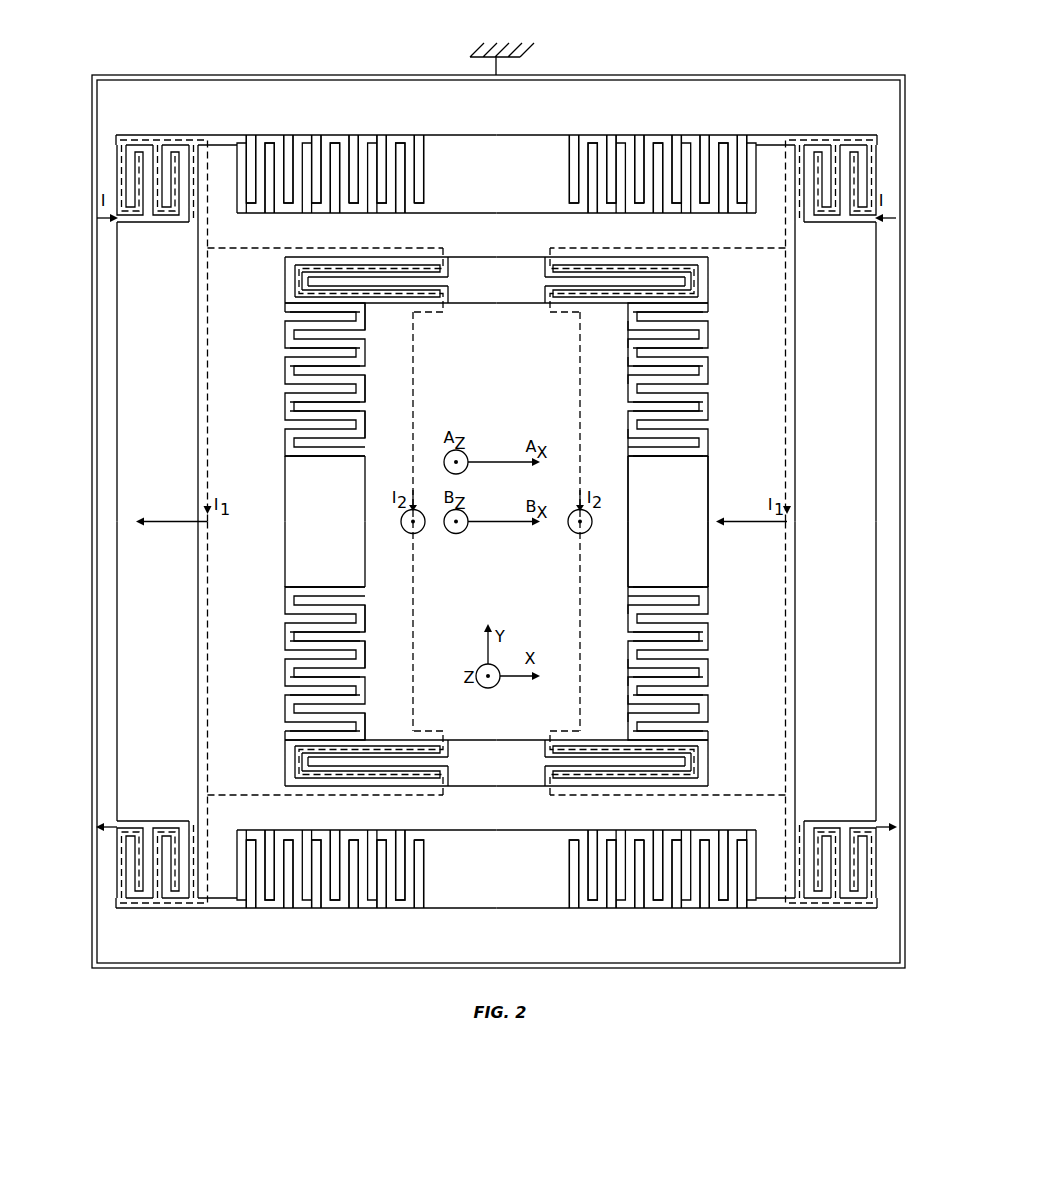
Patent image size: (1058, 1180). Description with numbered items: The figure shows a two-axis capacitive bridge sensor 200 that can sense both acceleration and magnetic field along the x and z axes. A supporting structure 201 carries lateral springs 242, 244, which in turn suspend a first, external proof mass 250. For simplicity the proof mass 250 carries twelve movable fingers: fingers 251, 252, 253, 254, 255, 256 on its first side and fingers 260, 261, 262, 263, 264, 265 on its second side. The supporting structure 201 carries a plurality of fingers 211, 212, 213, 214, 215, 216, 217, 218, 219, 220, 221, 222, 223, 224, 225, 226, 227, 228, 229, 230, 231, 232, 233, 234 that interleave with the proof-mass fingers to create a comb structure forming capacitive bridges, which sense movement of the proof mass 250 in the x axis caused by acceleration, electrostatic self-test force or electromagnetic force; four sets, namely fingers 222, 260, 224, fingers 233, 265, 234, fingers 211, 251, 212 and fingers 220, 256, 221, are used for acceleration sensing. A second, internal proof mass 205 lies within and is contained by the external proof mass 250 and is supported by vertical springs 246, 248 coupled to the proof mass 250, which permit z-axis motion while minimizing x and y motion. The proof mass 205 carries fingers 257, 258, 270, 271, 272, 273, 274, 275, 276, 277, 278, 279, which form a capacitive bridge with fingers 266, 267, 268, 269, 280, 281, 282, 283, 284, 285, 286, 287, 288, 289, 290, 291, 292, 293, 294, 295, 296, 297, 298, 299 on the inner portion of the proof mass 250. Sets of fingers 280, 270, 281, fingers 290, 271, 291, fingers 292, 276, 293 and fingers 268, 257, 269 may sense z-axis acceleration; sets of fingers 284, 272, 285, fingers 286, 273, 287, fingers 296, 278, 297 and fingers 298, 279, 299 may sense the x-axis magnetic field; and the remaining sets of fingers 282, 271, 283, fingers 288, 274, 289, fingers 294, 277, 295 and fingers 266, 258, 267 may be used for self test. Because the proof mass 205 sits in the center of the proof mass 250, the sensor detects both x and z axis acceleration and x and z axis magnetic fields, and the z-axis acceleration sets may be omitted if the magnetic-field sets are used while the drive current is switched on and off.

The capacitive bridge sensor 200 is at (808, 41).
The supporting structure 201 is at (776, 109).
The second (internal) proof mass 205 is at (486, 586).
The finger 211 is at (251, 840).
The finger 212 is at (288, 840).
The finger 213 is at (316, 840).
The finger 214 is at (382, 840).
The finger 215 is at (419, 840).
The finger 216 is at (574, 840).
The finger 217 is at (611, 840).
The finger 218 is at (639, 840).
The finger 219 is at (677, 840).
The finger 220 is at (705, 840).
The finger 221 is at (742, 840).
The finger 222 is at (251, 213).
The finger 223 is at (354, 840).
The finger 224 is at (288, 213).
The finger 225 is at (316, 213).
The finger 226 is at (354, 213).
The finger 227 is at (382, 213).
The finger 228 is at (419, 213).
The finger 229 is at (574, 213).
The finger 230 is at (611, 213).
The finger 231 is at (639, 213).
The finger 232 is at (677, 213).
The finger 233 is at (705, 213).
The finger 234 is at (742, 213).
The lateral spring 242 is at (855, 139).
The lateral spring 244 is at (145, 139).
The vertical spring 246 is at (285, 280).
The vertical spring 248 is at (285, 764).
The first (external) proof mass 250 is at (728, 561).
The finger 251 is at (270, 908).
The finger 252 is at (335, 908).
The finger 253 is at (400, 908).
The finger 254 is at (593, 908).
The finger 255 is at (658, 908).
The finger 256 is at (723, 908).
The finger 257 is at (628, 717).
The finger 258 is at (628, 663).
The finger 260 is at (270, 143).
The finger 261 is at (335, 143).
The finger 262 is at (400, 143).
The finger 263 is at (593, 143).
The finger 264 is at (658, 143).
The finger 265 is at (723, 143).
The finger 266 is at (708, 647).
The finger 267 is at (708, 681).
The finger 268 is at (708, 698).
The finger 269 is at (708, 737).
The finger 270 is at (365, 325).
The finger 271 is at (365, 379).
The finger 272 is at (365, 432).
The finger 273 is at (365, 609).
The finger 274 is at (365, 663).
The finger 275 is at (365, 717).
The finger 276 is at (628, 325).
The finger 277 is at (628, 379).
The finger 278 is at (628, 432).
The finger 279 is at (628, 609).
The finger 280 is at (285, 311).
The finger 281 is at (285, 345).
The finger 282 is at (285, 362).
The finger 283 is at (285, 396).
The finger 284 is at (285, 412).
The finger 285 is at (285, 452).
The finger 286 is at (285, 596).
The finger 287 is at (285, 629).
The finger 288 is at (285, 647).
The finger 289 is at (285, 681).
The finger 290 is at (285, 698).
The finger 291 is at (285, 737).
The finger 292 is at (708, 311).
The finger 293 is at (708, 345).
The finger 294 is at (708, 362).
The finger 295 is at (708, 396).
The finger 296 is at (708, 412).
The finger 297 is at (708, 452).
The finger 298 is at (708, 596).
The finger 299 is at (708, 629).